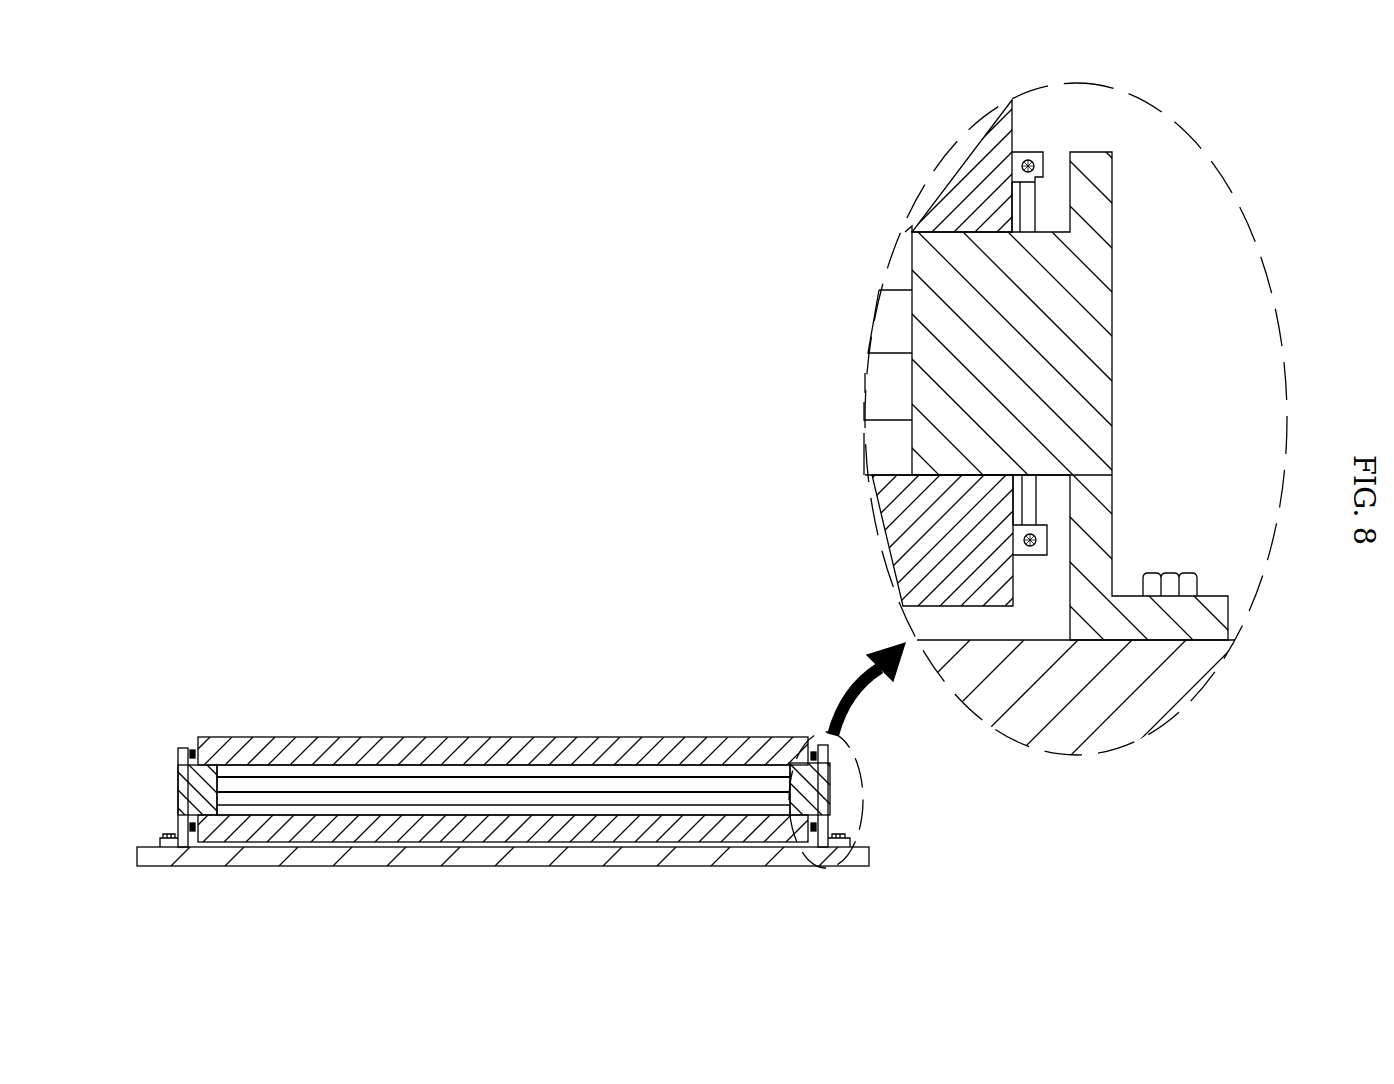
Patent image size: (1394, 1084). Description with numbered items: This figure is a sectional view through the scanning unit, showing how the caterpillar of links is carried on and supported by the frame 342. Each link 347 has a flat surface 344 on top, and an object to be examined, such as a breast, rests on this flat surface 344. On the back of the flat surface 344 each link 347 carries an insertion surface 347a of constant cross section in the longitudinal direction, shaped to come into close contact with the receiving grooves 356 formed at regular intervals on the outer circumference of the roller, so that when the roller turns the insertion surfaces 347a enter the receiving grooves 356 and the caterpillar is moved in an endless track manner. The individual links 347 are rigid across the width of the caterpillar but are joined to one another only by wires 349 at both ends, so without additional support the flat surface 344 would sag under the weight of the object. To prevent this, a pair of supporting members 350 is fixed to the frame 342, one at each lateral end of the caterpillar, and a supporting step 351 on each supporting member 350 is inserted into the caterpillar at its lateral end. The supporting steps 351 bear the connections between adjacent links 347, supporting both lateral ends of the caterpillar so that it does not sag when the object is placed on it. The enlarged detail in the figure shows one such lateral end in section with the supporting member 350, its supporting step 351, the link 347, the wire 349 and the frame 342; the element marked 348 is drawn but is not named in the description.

The frame 342 is at (1052, 757).
The flat surface 344 is at (662, 738).
The link 347 is at (935, 170).
The insertion surface 347a is at (887, 475).
The spacer pin 348 is at (1040, 172).
The wire 349 is at (1030, 158).
The supporting member 350 is at (1130, 375).
The supporting step 351 is at (905, 230).
The receiving groove 356 is at (880, 393).